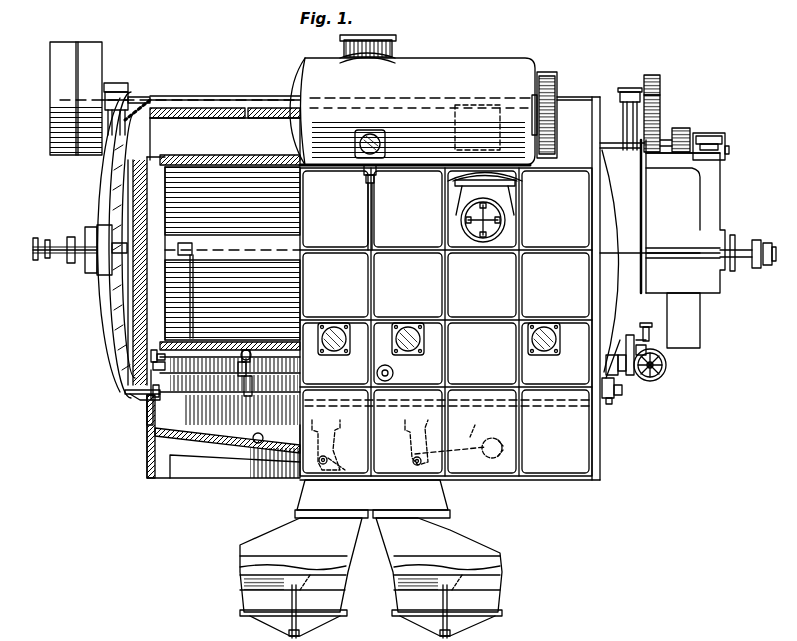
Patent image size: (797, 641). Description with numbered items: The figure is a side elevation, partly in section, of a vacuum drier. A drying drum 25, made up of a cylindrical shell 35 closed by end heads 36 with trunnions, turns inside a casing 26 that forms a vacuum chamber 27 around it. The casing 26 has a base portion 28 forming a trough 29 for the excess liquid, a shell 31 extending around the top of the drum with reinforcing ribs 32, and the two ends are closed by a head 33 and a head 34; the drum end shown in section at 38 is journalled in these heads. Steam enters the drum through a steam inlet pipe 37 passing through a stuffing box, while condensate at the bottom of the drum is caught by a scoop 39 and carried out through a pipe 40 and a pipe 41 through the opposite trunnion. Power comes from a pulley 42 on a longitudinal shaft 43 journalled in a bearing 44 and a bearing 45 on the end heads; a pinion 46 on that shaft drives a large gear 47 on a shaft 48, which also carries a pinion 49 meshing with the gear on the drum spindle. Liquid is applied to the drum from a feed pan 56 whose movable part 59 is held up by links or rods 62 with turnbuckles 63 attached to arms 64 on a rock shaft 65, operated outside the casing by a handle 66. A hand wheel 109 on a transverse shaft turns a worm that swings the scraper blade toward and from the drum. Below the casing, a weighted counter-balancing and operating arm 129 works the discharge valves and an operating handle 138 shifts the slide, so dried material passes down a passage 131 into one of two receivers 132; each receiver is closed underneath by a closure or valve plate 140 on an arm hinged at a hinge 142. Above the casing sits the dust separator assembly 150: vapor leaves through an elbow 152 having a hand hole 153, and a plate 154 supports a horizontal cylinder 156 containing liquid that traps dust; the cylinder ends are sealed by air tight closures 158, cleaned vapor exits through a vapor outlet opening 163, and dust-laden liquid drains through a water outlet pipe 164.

The pulley 42 is at (50, 75).
The bearing 44 is at (114, 83).
The longitudinal shaft 43 is at (144, 96).
The casing 26 is at (242, 97).
The vacuum chamber 27 is at (225, 139).
The drying drum 25 is at (246, 160).
The head 33 is at (113, 191).
The pipe 40 is at (193, 252).
The pipe 41 is at (35, 262).
The drum 38 is at (128, 311).
The scoop 39 is at (234, 340).
The movable part of feed pan 59 is at (246, 340).
The cylindrical shell 35 is at (258, 340).
The links or rods 62 is at (160, 372).
The turnbuckle 63 is at (240, 370).
The rock shaft 65 is at (128, 395).
The arms 64 is at (158, 396).
The base portion 28 is at (147, 460).
The trough 29 is at (256, 442).
The feed pan 56 is at (302, 354).
The shell 31 is at (446, 244).
The reinforcing ribs 32 is at (517, 291).
The counter-balancing and operating arm 129 is at (447, 429).
The operating handle 138 is at (356, 462).
The passage 131 is at (372, 499).
The receiver 132 is at (371, 565).
The hinge 142 is at (370, 604).
The closure or valve plate 140 is at (252, 618).
The horizontal cylinder 156 is at (492, 46).
The vapor outlet opening 163 is at (395, 38).
The tank assembly 150 is at (412, 96).
The water outlet pipe 164 is at (364, 183).
The plate 154 is at (452, 180).
The elbow 152 is at (485, 197).
The hand hole 153 is at (500, 213).
The air tight closure 158 is at (553, 80).
The bearing 45 is at (632, 88).
The large gear 47 is at (660, 78).
The pinion 46 is at (661, 98).
The pinion 49 is at (690, 132).
The shaft 48 is at (730, 151).
The head 34 is at (602, 272).
The steam inlet pipe 37 is at (733, 244).
The end heads 36 is at (765, 269).
The hand wheel 109 is at (667, 373).
The operating handle 66 is at (622, 392).